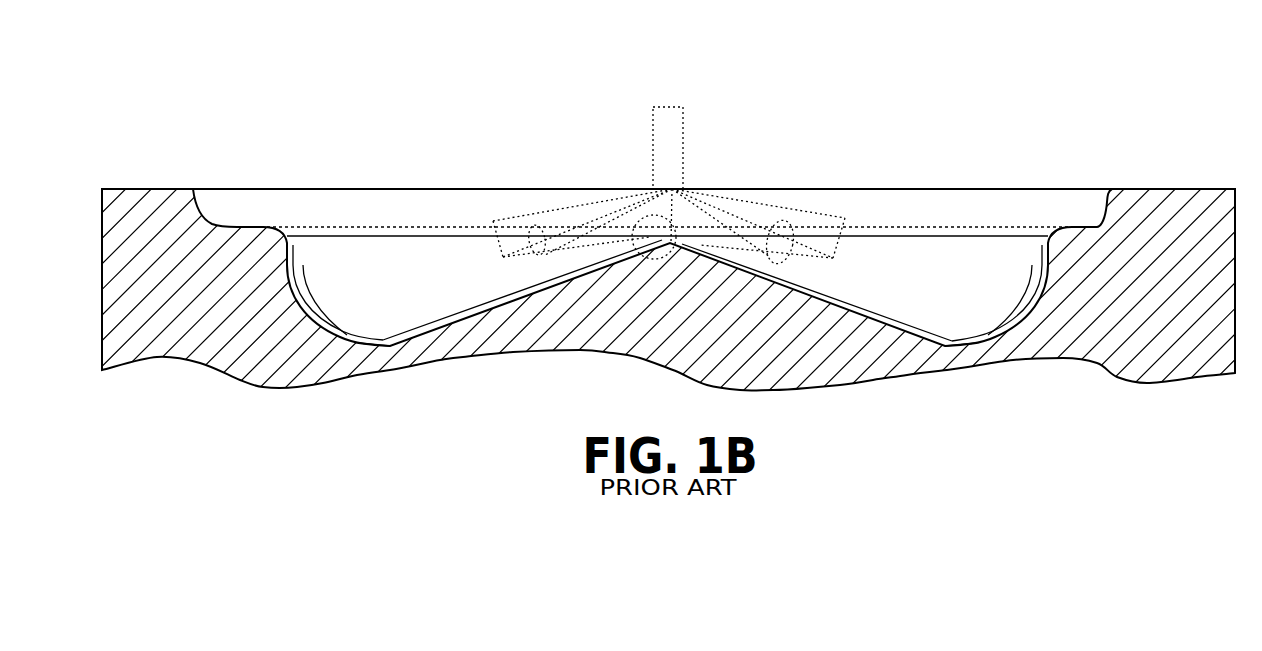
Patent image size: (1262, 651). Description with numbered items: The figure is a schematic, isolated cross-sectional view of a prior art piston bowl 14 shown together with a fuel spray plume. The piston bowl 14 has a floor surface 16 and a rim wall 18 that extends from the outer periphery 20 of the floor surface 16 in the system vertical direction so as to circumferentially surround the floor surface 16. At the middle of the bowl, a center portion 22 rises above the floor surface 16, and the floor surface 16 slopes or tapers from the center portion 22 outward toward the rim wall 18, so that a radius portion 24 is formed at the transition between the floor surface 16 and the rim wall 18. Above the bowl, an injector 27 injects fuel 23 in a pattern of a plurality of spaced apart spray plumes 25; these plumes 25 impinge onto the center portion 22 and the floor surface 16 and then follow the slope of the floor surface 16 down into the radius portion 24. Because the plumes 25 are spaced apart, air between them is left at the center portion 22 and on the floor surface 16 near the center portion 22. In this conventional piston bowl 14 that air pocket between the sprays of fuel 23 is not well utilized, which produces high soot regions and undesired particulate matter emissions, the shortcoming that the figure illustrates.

The piston bowl 14 is at (1052, 68).
The floor surface 16 is at (452, 318).
The rim wall 18 is at (170, 189).
The outer periphery 20 is at (388, 349).
The center portion 22 is at (671, 243).
The fuel 23 is at (733, 174).
The radius portion 24 is at (322, 334).
The spray plumes 25 is at (512, 262).
The injector 27 is at (674, 107).